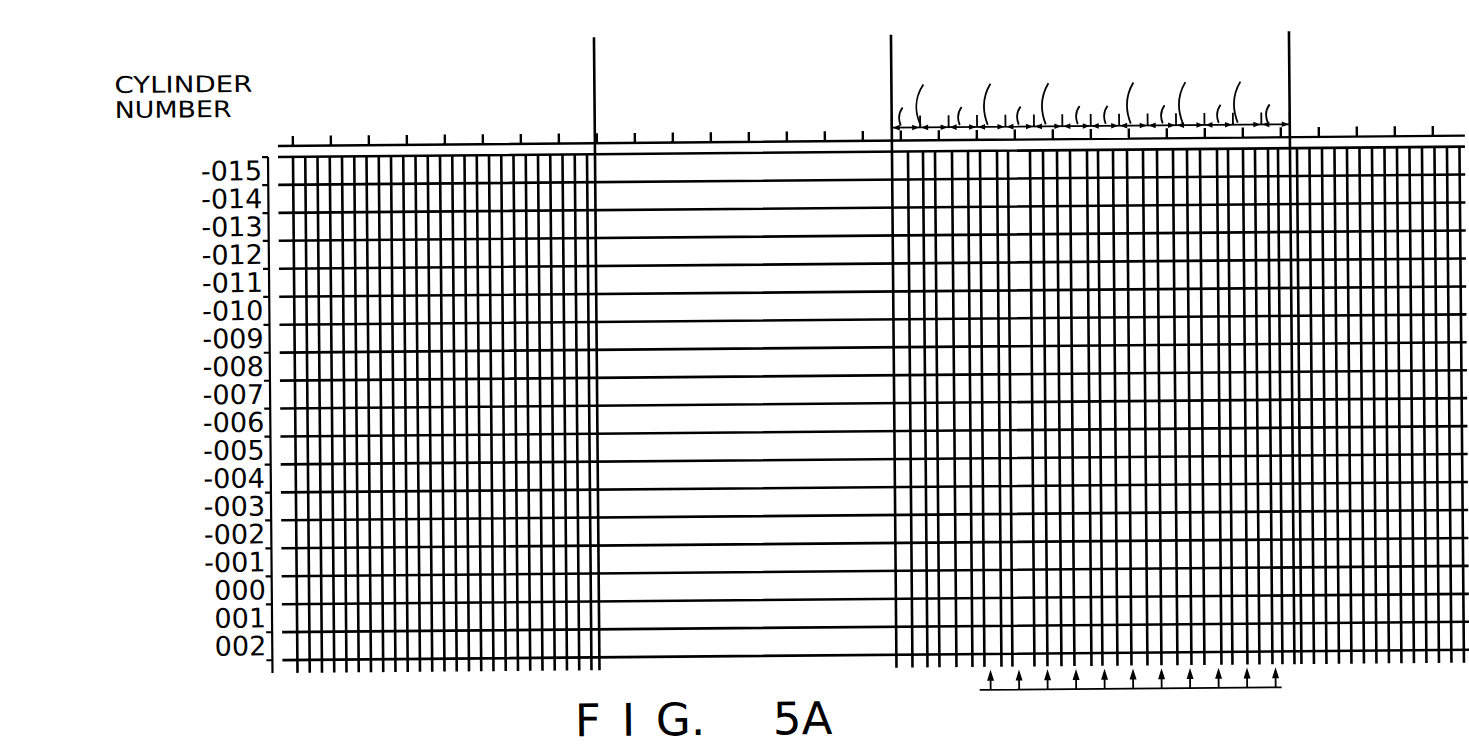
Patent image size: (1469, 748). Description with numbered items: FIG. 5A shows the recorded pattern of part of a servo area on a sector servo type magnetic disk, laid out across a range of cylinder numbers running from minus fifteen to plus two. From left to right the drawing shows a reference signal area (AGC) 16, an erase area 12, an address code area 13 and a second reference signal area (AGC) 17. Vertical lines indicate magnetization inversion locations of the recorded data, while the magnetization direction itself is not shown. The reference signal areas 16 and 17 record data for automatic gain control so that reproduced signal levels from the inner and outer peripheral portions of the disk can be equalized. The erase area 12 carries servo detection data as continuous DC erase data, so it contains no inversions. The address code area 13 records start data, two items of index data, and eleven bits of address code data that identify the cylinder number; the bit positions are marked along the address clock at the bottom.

The reference signal area (AGC) 16 is at (595, 64).
The erase area 12 is at (892, 64).
The address code area 13 is at (1290, 64).
The reference signal area (AGC) 17 is at (1460, 64).